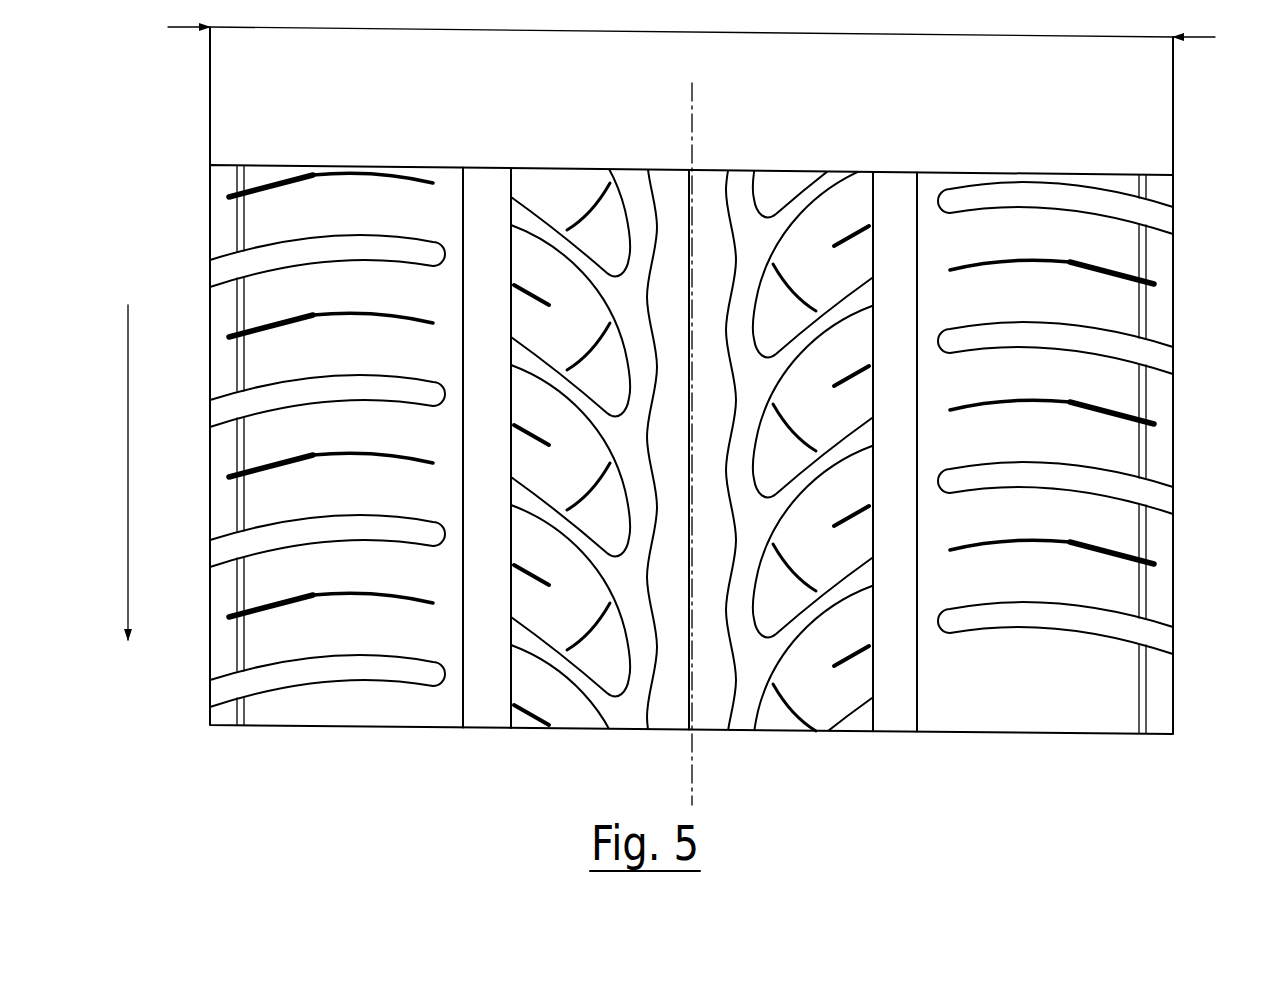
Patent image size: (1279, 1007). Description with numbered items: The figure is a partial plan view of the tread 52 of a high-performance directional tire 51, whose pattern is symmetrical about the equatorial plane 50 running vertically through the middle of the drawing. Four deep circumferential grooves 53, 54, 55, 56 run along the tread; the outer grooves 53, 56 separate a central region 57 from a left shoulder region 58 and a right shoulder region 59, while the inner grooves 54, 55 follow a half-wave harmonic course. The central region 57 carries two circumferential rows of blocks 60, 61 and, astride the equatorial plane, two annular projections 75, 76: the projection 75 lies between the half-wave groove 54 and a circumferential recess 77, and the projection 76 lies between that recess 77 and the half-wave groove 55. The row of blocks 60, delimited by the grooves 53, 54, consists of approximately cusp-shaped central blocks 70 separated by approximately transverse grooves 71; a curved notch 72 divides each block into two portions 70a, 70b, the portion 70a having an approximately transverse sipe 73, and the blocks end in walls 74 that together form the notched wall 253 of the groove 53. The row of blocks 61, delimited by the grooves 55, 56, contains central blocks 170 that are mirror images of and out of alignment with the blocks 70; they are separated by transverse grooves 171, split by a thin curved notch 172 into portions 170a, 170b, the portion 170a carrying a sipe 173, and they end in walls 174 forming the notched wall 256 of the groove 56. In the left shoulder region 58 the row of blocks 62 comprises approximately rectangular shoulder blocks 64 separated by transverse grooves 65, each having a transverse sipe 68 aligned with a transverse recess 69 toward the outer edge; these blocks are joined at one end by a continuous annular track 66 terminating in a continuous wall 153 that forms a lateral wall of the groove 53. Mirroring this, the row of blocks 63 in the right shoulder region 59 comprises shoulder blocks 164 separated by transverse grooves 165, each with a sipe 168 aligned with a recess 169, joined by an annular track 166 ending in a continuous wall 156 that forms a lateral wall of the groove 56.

The equatorial plane 50 is at (692, 795).
The tire 51 is at (1031, 162).
The tread 52 is at (1111, 171).
The circumferential groove 53 is at (488, 186).
The circumferential groove 54 is at (635, 172).
The circumferential groove 55 is at (747, 187).
The circumferential groove 56 is at (893, 187).
The central region 57 is at (718, 732).
The shoulder region 58 is at (358, 733).
The shoulder region 59 is at (1021, 736).
The row of blocks 60 is at (564, 163).
The row of blocks 61 is at (801, 168).
The row of blocks 62 is at (358, 163).
The row of blocks 63 is at (986, 170).
The shoulder block 64 is at (262, 292).
The transverse groove 65 is at (300, 247).
The annular track 66 is at (441, 163).
The sipe 68 is at (353, 318).
The transverse recess 69 is at (288, 318).
The central block 70 is at (558, 318).
The portion 70a is at (562, 281).
The portion 70b is at (627, 388).
The transverse groove 71 is at (512, 249).
The curved notch 72 is at (607, 333).
The sipe 73 is at (511, 308).
The wall 74 is at (512, 413).
The annular projection 75 is at (663, 187).
The annular projection 76 is at (708, 187).
The circumferential recess 77 is at (700, 187).
The continuous wall 153 is at (463, 718).
The continuous wall 156 is at (917, 718).
The shoulder block 164 is at (1117, 248).
The transverse groove 165 is at (1050, 194).
The annular track 166 is at (935, 187).
The sipe 168 is at (1013, 268).
The transverse recess 169 is at (1110, 276).
The central block 170 is at (797, 280).
The portion 170a is at (818, 223).
The portion 170b is at (757, 328).
The transverse groove 171 is at (820, 330).
The curved notch 172 is at (777, 285).
The sipe 173 is at (837, 240).
The wall 174 is at (873, 420).
The notched wall 253 is at (510, 718).
The notched wall 256 is at (873, 718).